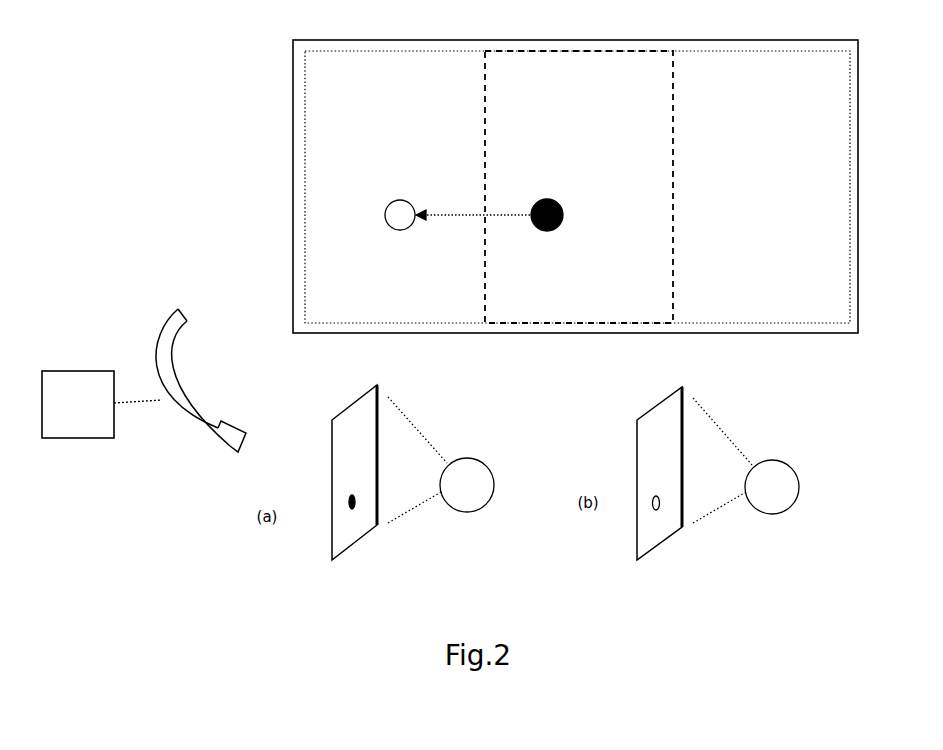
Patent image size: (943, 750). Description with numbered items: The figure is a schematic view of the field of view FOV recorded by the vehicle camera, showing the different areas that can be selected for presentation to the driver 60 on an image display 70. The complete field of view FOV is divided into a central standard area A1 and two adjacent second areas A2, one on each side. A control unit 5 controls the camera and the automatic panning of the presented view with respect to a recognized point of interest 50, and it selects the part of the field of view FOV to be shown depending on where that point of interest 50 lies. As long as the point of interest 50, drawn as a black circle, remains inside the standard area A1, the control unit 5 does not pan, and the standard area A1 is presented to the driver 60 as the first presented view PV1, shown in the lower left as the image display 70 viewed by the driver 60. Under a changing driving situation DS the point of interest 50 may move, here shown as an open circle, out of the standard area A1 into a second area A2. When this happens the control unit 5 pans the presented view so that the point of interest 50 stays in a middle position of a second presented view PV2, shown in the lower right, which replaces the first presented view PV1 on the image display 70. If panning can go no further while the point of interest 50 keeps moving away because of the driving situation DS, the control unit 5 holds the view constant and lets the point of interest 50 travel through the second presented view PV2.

The control unit 5 is at (69, 413).
The point of interest 50 is at (402, 195).
The driver 60 is at (467, 517).
The image display 70 is at (360, 546).
The field of view FOV is at (283, 79).
The driving situation DS is at (459, 200).
The standard area A1 is at (647, 88).
The second area A2 is at (322, 90).
The first presented view PV1 is at (360, 447).
The second presented view PV2 is at (665, 447).